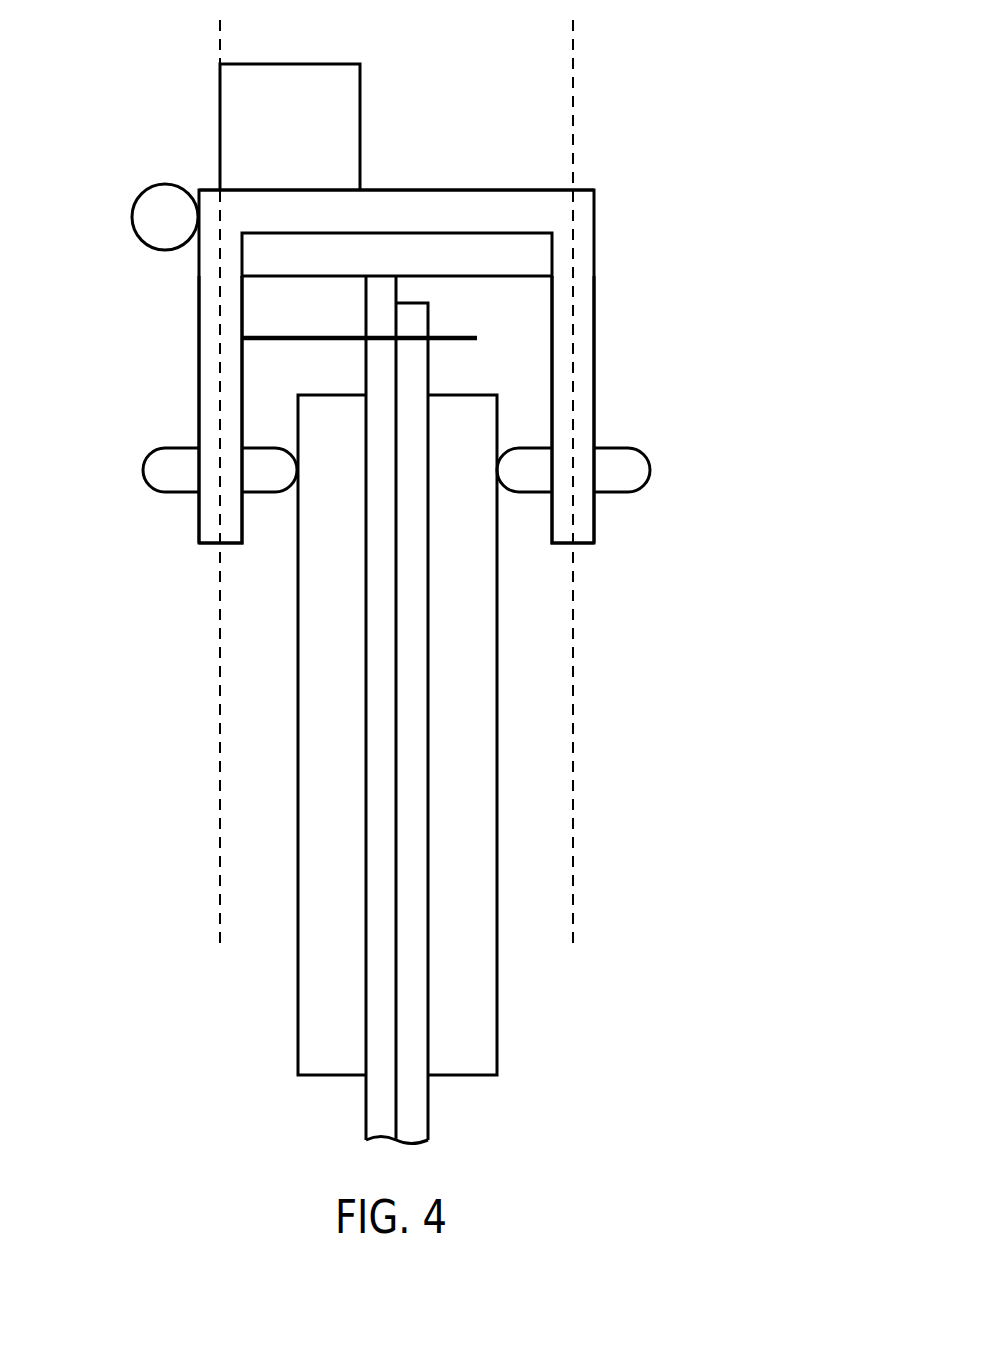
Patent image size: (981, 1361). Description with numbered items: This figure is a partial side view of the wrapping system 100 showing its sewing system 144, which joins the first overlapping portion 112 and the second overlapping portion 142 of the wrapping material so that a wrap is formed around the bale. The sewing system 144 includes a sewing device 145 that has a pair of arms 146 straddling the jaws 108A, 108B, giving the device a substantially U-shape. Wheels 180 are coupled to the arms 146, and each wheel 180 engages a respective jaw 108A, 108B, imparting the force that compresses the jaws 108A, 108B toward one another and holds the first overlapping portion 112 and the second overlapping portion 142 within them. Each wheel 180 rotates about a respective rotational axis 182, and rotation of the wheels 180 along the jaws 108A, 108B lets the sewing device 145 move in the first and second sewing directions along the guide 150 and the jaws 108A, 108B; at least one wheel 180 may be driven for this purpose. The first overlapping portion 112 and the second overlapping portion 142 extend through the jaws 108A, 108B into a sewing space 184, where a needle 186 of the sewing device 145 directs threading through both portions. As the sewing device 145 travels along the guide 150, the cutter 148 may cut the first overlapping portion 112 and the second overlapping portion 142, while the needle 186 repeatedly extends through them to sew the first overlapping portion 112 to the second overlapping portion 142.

The wrapping system 100 is at (730, 95).
The jaw 108A is at (305, 757).
The jaw 108B is at (472, 740).
The first overlapping portion 112 is at (366, 1092).
The second overlapping portion 142 is at (418, 1098).
The sewing system 144 is at (596, 157).
The sewing device 145 is at (395, 200).
The arms 146 is at (210, 385).
The cutter 148 is at (527, 252).
The guide 150 is at (165, 217).
The wheels 180 is at (160, 477).
The rotational axis 182 is at (220, 715).
The sewing space 184 is at (533, 327).
The needle 186 is at (332, 340).